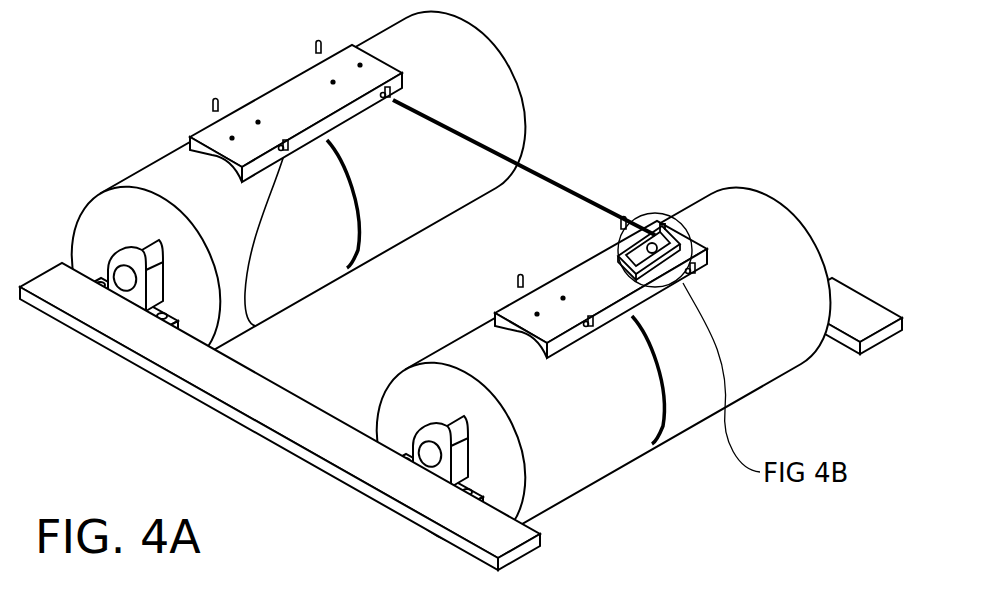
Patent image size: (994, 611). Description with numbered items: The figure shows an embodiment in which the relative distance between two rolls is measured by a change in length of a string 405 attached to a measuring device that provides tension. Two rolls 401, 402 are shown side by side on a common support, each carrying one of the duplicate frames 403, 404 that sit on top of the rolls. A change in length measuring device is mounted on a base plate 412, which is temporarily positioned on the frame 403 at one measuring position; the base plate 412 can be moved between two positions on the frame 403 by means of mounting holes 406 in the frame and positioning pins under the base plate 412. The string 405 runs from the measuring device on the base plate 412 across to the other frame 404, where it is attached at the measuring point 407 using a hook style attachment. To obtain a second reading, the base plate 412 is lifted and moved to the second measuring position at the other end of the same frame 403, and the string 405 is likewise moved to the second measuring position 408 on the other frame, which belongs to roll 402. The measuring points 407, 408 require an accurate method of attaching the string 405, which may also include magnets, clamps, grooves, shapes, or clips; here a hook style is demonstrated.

The roll 401 is at (440, 347).
The roll 402 is at (147, 165).
The frame 403 is at (500, 313).
The frame 404 is at (205, 128).
The string 405 is at (585, 185).
The mounting holes 406 is at (358, 66).
The measuring point 407 is at (393, 100).
The second measuring position 408 is at (256, 326).
The base plate 412 is at (613, 247).